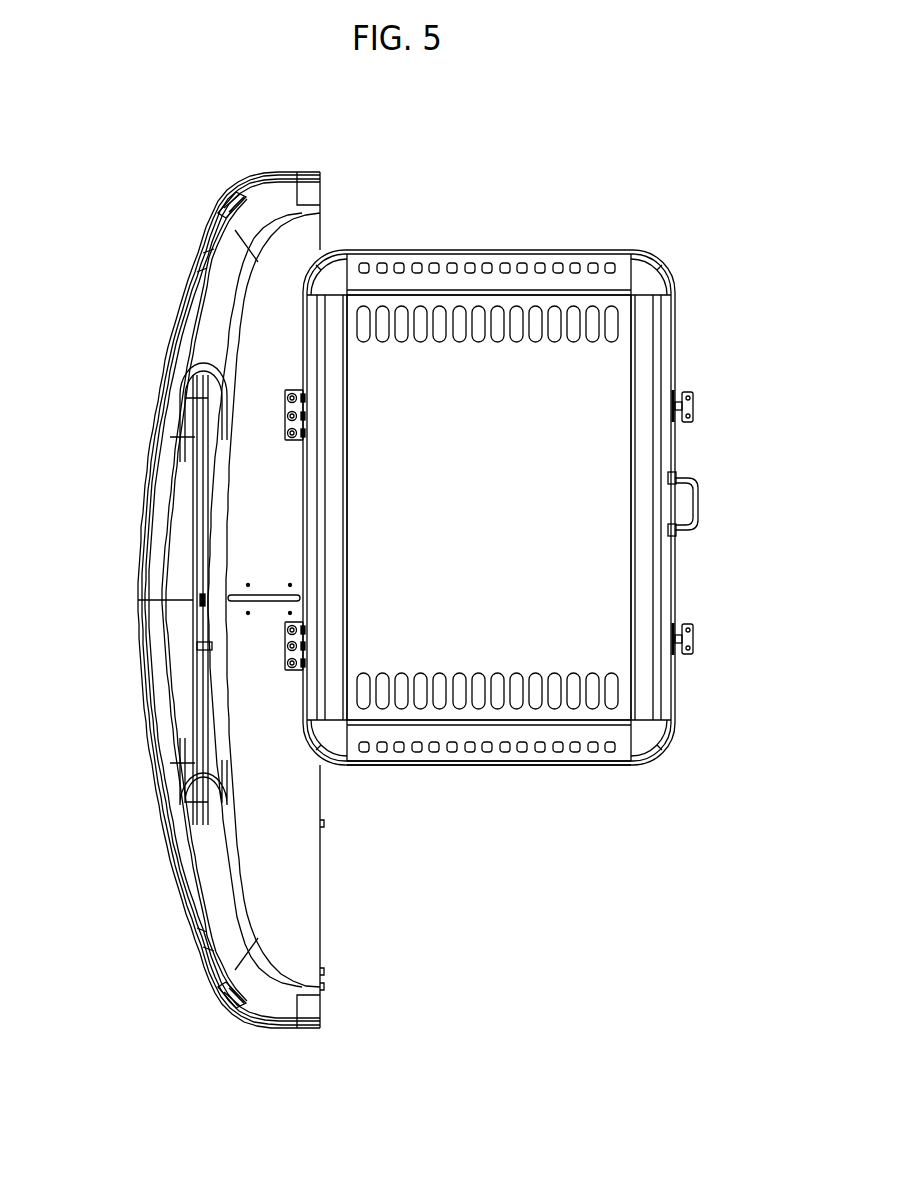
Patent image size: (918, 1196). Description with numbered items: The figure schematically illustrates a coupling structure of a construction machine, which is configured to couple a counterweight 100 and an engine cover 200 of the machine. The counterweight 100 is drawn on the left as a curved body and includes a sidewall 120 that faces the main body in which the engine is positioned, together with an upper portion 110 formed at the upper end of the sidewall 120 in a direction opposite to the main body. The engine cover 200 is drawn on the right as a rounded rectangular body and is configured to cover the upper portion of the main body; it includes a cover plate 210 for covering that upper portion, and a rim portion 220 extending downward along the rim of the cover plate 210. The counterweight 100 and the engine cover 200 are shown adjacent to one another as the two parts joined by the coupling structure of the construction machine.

The counterweight 100 is at (149, 902).
The upper portion 110 is at (200, 722).
The sidewall 120 is at (320, 888).
The engine cover 200 is at (709, 320).
The cover plate 210 is at (604, 598).
The rim portion 220 is at (588, 758).